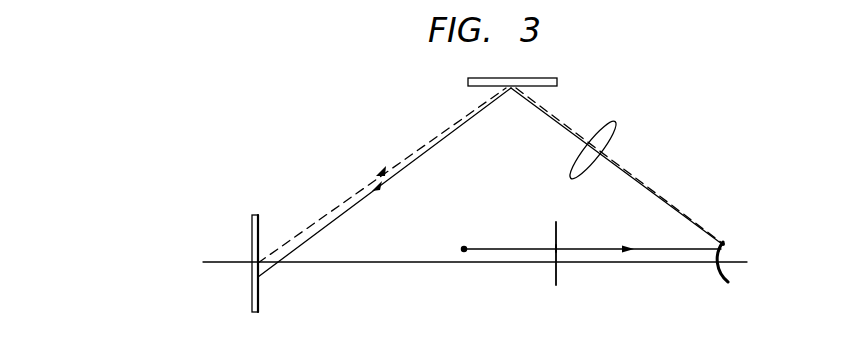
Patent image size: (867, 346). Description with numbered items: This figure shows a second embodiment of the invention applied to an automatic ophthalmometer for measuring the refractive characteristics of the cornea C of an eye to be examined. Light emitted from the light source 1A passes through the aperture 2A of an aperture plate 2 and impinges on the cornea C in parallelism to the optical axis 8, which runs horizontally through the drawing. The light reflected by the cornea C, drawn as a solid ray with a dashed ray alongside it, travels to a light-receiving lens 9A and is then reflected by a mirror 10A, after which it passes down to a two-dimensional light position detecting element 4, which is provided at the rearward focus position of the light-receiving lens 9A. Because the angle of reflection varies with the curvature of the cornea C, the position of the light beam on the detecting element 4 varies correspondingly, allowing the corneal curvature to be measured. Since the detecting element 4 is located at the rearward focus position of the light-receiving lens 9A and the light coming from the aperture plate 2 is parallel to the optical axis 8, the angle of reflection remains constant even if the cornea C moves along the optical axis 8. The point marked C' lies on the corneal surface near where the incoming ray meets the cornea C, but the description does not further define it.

The mirror 10A is at (557, 81).
The light-receiving lens 9A is at (613, 123).
The two-dimensional light position detecting element 4 is at (258, 222).
The optical axis 8 is at (228, 262).
The light source 1A is at (586, 236).
The aperture plate 2 is at (558, 230).
The aperture 2A is at (557, 246).
The cornea C is at (727, 234).
The point on curved surface C' is at (747, 240).